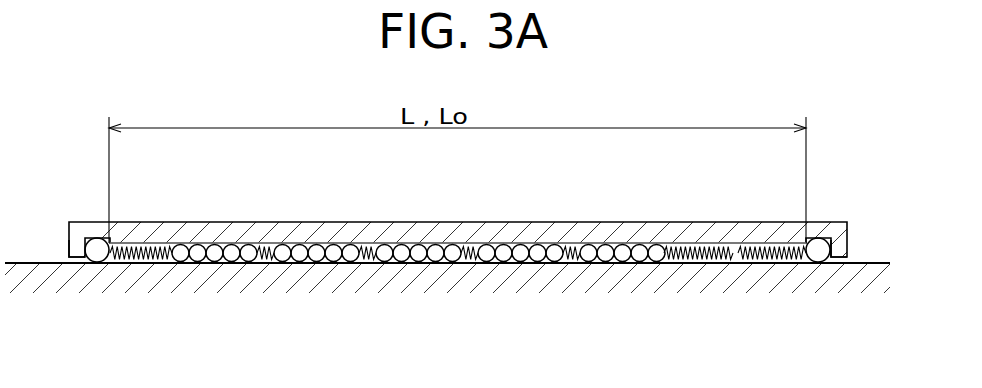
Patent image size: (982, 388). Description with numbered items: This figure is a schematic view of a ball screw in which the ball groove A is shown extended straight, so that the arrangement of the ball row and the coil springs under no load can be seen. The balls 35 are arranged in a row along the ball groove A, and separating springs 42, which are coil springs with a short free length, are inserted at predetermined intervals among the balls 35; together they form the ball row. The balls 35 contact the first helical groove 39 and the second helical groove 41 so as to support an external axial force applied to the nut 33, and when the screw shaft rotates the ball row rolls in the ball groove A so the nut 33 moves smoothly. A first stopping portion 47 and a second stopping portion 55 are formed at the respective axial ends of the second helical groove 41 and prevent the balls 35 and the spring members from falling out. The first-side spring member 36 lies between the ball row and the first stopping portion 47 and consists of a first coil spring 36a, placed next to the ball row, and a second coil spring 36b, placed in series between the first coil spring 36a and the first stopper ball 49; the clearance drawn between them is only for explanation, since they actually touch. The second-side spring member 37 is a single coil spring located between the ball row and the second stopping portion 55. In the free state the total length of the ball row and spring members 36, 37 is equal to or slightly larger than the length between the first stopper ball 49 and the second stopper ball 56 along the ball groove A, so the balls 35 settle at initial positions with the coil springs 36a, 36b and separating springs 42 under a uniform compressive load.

The nut 33 is at (272, 222).
The balls 35 is at (400, 243).
The ball groove A is at (497, 243).
The separating springs 42 is at (572, 243).
The second helical groove 41 is at (731, 259).
The first-side spring member 36 is at (735, 307).
The first coil spring 36a is at (700, 263).
The second coil spring 36b is at (775, 263).
The second-side spring member 37 is at (148, 262).
The first stopping portion 47 is at (820, 207).
The second stopping portion 55 is at (90, 212).
The first helical groove 39 is at (857, 263).
The second stopper ball 56 is at (97, 262).
The first stopper ball 49 is at (822, 262).